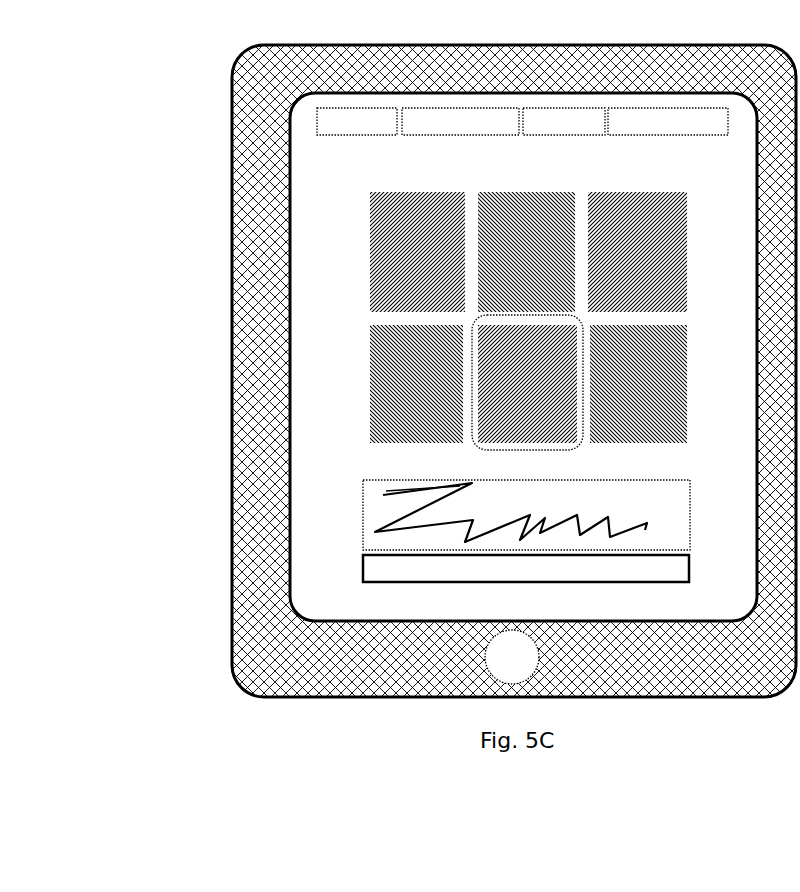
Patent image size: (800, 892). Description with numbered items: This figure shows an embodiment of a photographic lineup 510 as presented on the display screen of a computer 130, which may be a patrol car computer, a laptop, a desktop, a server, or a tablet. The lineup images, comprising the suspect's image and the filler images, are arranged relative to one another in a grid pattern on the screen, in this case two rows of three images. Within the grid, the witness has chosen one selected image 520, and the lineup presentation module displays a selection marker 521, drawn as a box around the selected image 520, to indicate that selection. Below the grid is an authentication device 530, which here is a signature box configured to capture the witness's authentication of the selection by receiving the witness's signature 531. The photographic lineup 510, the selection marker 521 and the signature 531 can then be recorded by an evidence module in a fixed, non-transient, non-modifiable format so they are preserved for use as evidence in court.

The computer 130 is at (245, 288).
The photographic lineup 510 is at (337, 190).
The selected image 520 is at (483, 418).
The selection marker 521 is at (472, 362).
The authentication device 530 is at (660, 522).
The witness's signature 531 is at (392, 505).